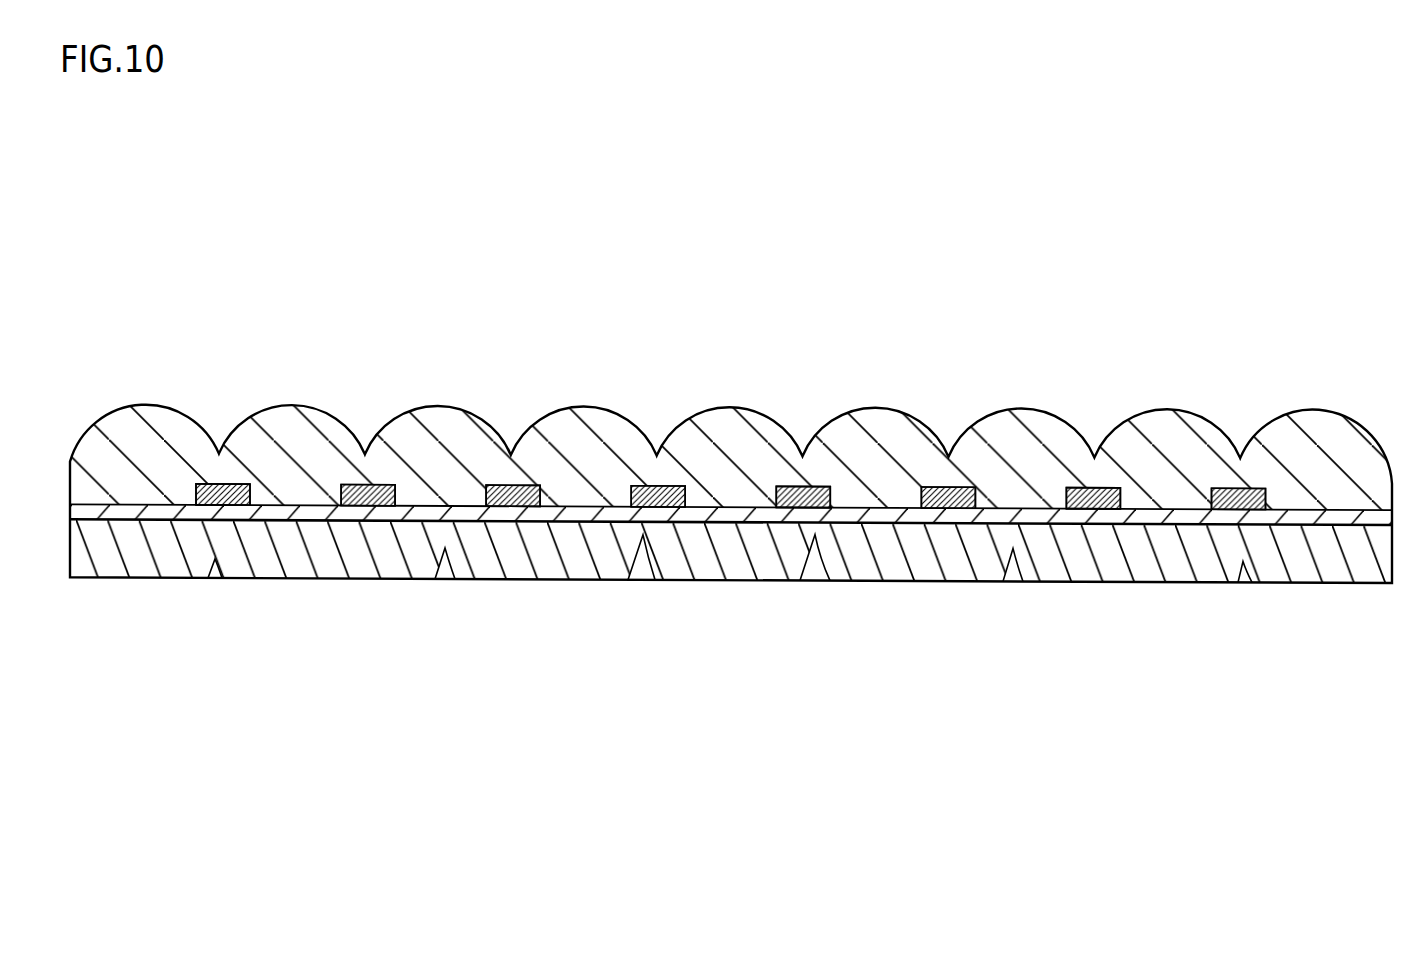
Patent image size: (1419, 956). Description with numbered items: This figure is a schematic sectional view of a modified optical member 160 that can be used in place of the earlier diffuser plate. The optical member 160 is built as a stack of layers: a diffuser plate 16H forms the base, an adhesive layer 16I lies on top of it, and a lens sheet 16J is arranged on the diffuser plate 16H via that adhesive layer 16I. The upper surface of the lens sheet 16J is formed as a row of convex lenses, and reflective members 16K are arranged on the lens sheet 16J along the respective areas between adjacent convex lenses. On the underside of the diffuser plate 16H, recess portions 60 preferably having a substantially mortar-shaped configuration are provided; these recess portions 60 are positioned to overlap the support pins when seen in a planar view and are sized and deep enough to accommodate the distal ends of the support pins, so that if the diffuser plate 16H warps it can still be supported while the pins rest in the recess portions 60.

The optical member 160 is at (1325, 362).
The diffuser plate 16H is at (103, 540).
The adhesive layer 16I is at (143, 510).
The lens sheet 16J is at (173, 430).
The reflective members 16K is at (233, 482).
The recess portions 60 is at (445, 581).